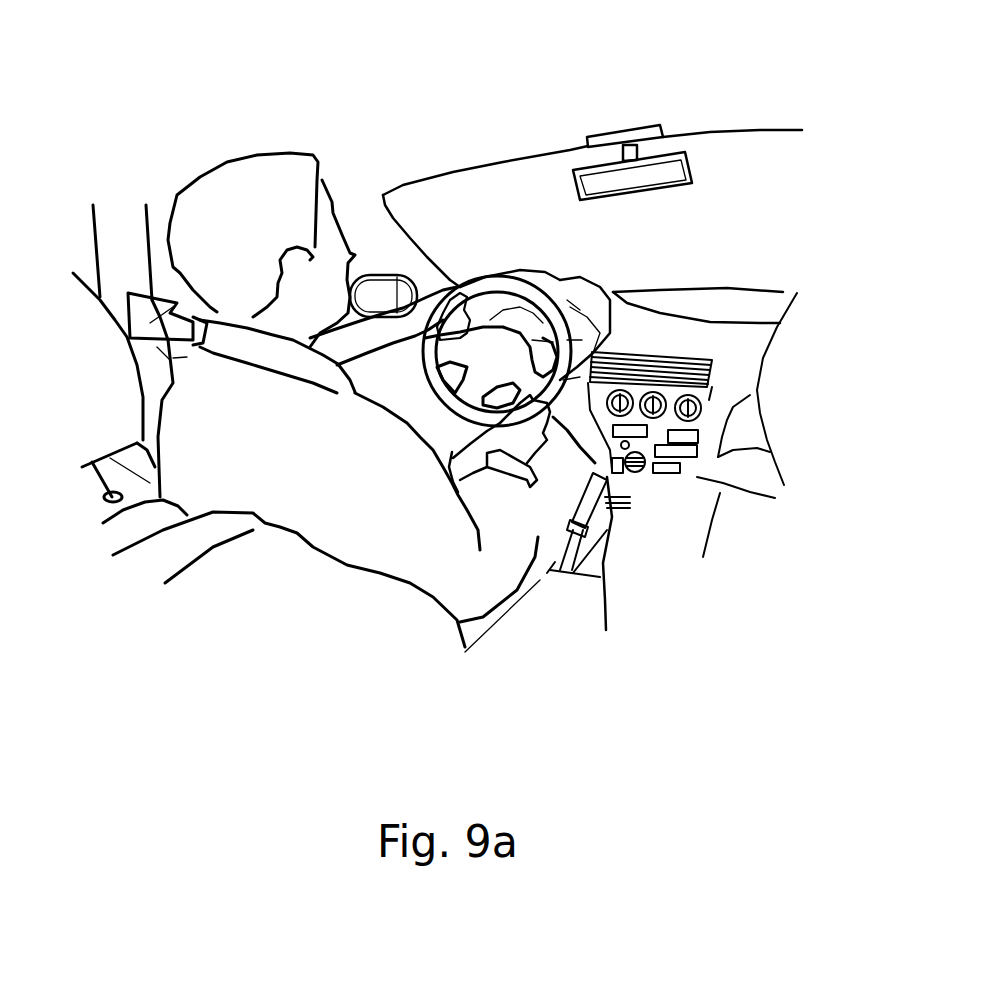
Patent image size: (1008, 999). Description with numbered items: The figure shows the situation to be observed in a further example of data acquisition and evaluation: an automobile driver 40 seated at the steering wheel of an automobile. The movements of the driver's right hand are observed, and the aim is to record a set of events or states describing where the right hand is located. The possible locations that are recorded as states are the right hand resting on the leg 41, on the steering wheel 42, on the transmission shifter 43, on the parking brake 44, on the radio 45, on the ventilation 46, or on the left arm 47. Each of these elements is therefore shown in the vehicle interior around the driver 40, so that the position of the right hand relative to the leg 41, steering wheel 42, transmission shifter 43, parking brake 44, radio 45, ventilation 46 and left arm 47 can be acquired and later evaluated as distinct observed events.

The automobile driver 40 is at (592, 110).
The leg 41 is at (559, 450).
The steering wheel 42 is at (495, 283).
The transmission shifter 43 is at (647, 473).
The parking brake 44 is at (585, 510).
The radio 45 is at (703, 475).
The ventilation 46 is at (695, 467).
The left arm 47 is at (438, 318).